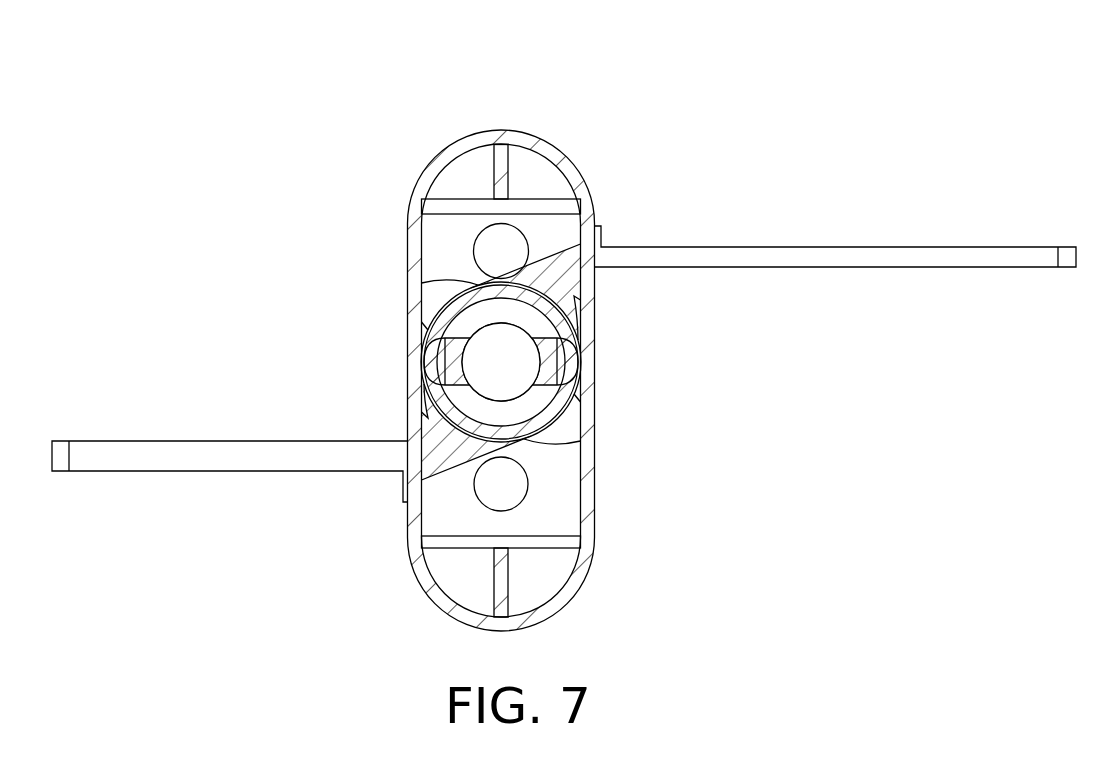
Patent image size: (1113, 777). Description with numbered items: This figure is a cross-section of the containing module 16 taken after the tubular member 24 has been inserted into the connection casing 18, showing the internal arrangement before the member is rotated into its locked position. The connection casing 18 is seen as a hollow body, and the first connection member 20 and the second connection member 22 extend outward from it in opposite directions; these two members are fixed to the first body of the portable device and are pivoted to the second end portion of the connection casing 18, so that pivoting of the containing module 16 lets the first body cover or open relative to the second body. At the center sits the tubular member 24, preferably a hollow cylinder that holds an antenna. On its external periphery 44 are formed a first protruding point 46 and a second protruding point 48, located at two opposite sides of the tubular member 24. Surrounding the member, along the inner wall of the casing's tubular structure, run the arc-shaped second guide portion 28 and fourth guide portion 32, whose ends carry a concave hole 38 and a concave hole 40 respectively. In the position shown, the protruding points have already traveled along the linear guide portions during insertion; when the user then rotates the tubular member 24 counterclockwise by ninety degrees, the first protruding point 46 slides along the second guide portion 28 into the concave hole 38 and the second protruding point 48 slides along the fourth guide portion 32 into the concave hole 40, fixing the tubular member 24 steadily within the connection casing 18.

The containing module 16 is at (961, 77).
The connection casing 18 is at (550, 143).
The first connection member 20 is at (858, 256).
The second connection member 22 is at (183, 456).
The tubular member 24 is at (528, 313).
The second guide portion 28 is at (440, 425).
The fourth guide portion 32 is at (568, 303).
The concave hole 38 is at (530, 452).
The concave hole 40 is at (455, 285).
The external periphery 44 is at (560, 310).
The first protruding point 46 is at (432, 357).
The second protruding point 48 is at (560, 358).